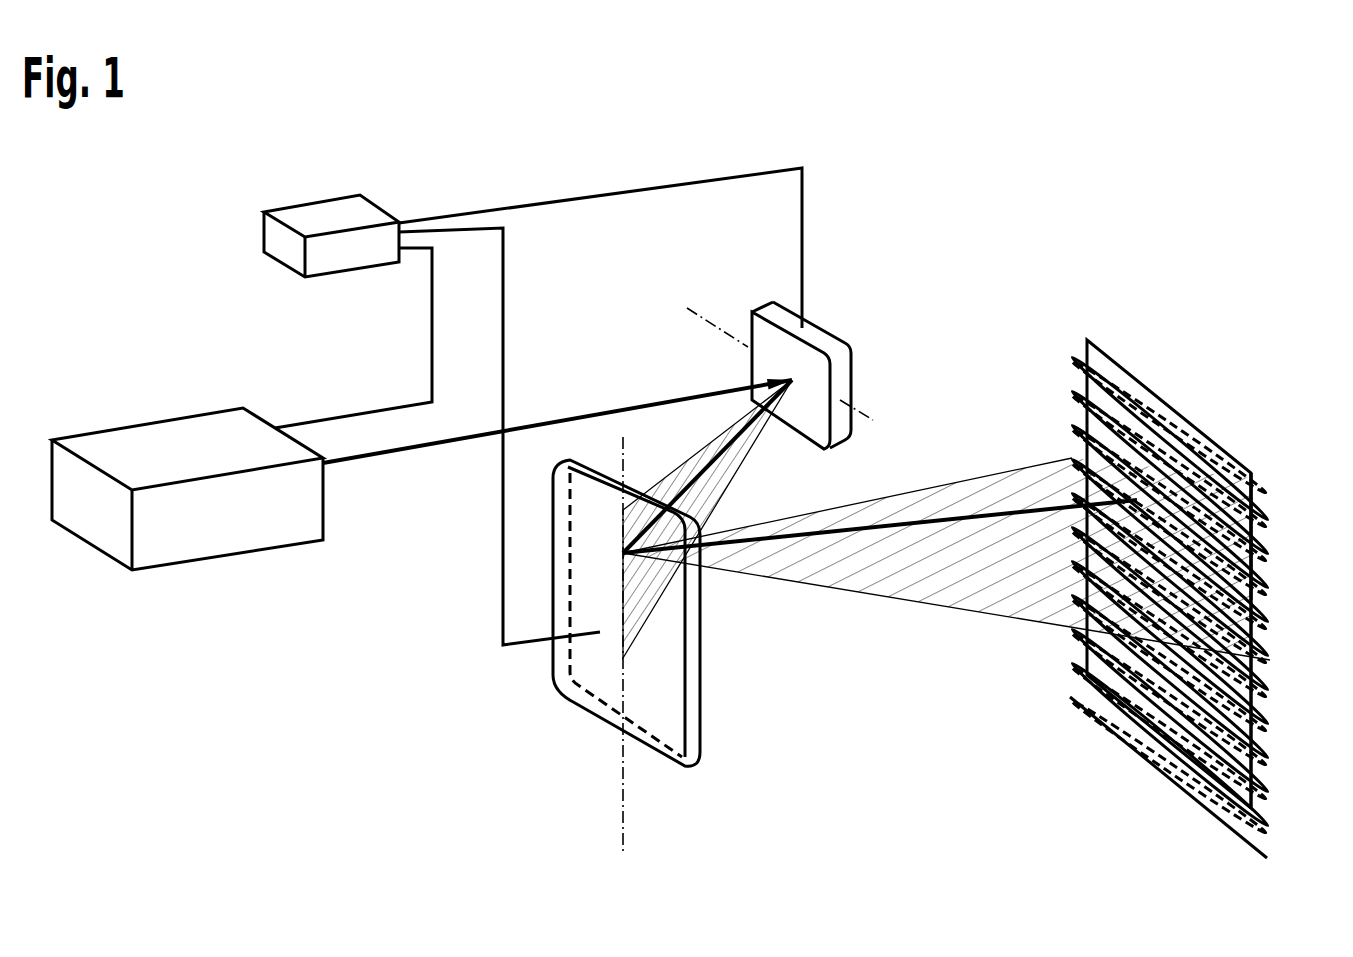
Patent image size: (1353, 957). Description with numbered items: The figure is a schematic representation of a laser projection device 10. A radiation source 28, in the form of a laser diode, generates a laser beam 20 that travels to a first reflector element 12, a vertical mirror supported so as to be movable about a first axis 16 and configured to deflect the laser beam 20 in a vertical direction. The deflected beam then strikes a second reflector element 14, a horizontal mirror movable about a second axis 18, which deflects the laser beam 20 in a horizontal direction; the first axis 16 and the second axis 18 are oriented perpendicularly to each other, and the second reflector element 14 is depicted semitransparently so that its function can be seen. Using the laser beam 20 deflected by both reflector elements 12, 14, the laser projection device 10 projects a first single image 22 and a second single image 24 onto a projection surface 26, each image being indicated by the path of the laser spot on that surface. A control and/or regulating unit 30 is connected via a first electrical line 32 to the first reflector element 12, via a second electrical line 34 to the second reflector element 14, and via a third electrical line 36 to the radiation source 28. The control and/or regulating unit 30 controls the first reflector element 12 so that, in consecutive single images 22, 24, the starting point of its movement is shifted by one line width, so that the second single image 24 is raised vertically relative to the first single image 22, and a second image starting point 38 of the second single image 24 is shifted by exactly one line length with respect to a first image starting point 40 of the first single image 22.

The laser projection device 10 is at (136, 252).
The first reflector element 12 is at (777, 312).
The second reflector element 14 is at (678, 682).
The first axis 16 is at (874, 420).
The second axis 18 is at (620, 840).
The laser beam 20 is at (423, 452).
The first single image 22 is at (1213, 483).
The second single image 24 is at (1143, 430).
The projection surface 26 is at (1247, 473).
The radiation source 28 is at (180, 438).
The control and/or regulating unit 30 is at (327, 213).
The first electrical line 32 is at (567, 202).
The second electrical line 34 is at (505, 310).
The third electrical line 36 is at (428, 342).
The second image starting point 38 is at (1252, 473).
The first image starting point 40 is at (1087, 340).